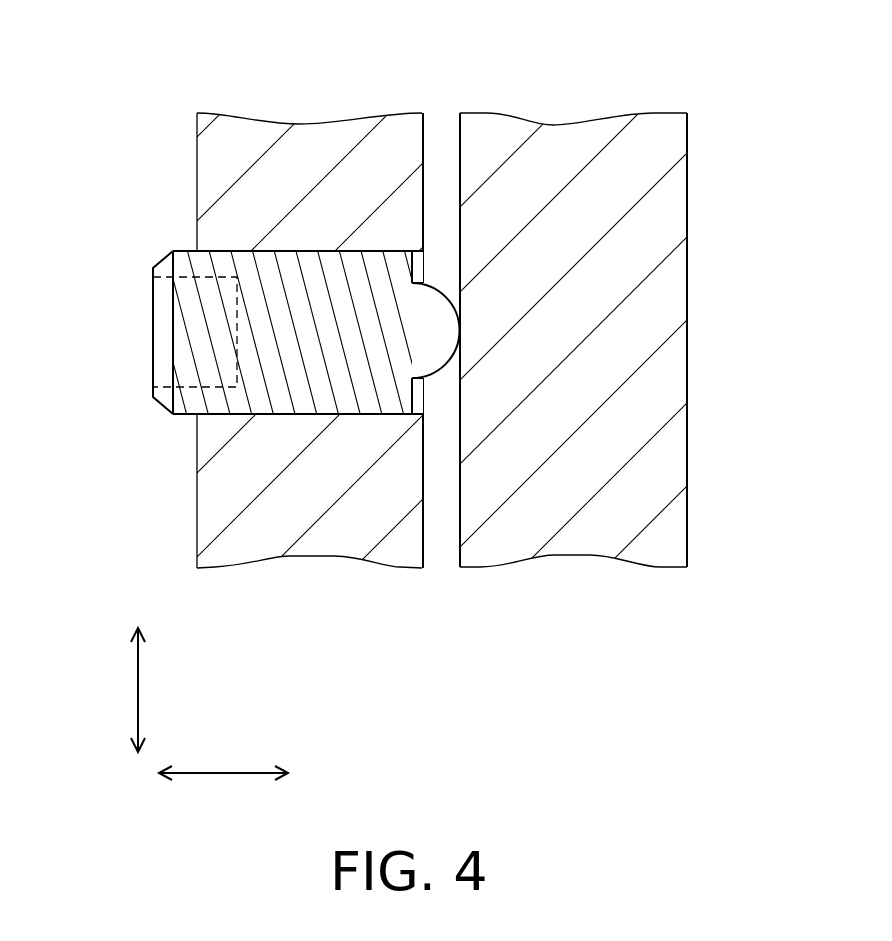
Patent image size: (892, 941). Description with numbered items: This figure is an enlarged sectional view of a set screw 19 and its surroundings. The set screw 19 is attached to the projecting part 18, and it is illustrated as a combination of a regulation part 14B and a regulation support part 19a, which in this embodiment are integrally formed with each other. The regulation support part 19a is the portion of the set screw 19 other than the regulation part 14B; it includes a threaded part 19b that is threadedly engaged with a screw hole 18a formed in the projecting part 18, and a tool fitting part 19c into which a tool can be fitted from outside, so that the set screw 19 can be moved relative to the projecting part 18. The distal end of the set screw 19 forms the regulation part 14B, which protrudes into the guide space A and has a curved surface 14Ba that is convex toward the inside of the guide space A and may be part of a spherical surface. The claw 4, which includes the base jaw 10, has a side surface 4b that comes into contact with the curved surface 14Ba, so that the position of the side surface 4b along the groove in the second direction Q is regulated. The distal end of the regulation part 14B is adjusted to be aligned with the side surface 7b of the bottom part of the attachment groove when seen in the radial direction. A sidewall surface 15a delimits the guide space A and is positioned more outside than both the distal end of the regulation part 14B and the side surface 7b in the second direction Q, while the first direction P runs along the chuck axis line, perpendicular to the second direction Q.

The claw 4 is at (646, 386).
The side surface of the claw 4b is at (462, 441).
The side surface of the bottom part 7b is at (462, 521).
The base jaw 10 is at (563, 147).
The regulation part 14B is at (484, 341).
The curved surface 14Ba is at (438, 378).
The sidewall surface 15a is at (423, 137).
The projecting part 18 is at (345, 138).
The screw hole 18a is at (370, 251).
The set screw 19 is at (305, 283).
The regulation support part 19a is at (240, 245).
The threaded part 19b is at (305, 267).
The tool fitting part 19c is at (190, 387).
The guide space A is at (447, 535).
The first direction P is at (124, 690).
The second direction Q is at (223, 790).